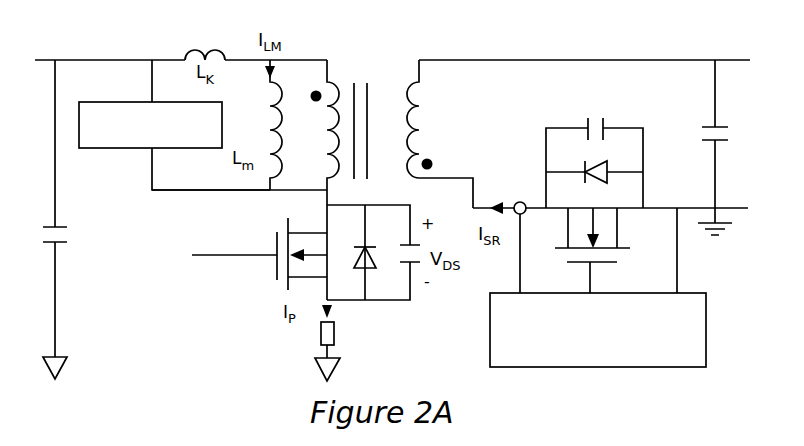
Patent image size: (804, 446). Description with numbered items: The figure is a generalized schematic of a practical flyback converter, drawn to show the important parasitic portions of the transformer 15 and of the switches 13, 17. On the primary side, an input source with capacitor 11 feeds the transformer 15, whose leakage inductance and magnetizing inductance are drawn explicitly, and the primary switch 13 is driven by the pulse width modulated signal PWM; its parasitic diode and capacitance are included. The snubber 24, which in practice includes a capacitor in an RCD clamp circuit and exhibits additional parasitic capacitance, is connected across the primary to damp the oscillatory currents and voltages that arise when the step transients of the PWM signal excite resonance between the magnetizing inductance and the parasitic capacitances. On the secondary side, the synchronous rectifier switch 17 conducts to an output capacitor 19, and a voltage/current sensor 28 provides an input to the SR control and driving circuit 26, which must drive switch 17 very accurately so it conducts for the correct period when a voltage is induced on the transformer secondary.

The input capacitor 11 is at (52, 226).
The switch 13 is at (273, 267).
The transformer 15 is at (146, 218).
The switch (synchronous rectifier) 17 is at (608, 263).
The output capacitor 19 is at (720, 143).
The snubber 24 is at (113, 149).
The SR control and driving circuit 26 is at (692, 292).
The voltage/current sensor 28 is at (516, 201).